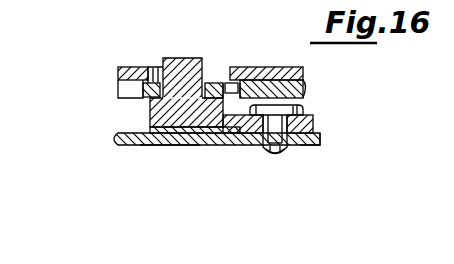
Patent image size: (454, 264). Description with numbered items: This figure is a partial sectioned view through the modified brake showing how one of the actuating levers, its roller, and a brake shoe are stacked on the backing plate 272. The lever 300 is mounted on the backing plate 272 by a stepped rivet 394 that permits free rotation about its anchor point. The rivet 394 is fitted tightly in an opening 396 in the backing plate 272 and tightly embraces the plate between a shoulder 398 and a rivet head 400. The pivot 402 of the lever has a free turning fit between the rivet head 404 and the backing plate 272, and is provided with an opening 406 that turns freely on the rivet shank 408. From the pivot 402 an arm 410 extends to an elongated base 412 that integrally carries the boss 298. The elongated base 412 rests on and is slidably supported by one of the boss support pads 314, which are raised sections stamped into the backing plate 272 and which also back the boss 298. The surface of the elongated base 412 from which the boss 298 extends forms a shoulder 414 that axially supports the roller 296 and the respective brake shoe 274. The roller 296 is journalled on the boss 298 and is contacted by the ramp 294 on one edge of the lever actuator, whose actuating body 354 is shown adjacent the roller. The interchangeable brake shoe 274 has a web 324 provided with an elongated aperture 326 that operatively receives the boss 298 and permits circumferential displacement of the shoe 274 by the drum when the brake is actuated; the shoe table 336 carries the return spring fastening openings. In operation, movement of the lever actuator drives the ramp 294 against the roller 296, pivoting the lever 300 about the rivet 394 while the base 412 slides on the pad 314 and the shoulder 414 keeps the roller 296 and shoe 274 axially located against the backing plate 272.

The backing plate 272 is at (121, 145).
The brake shoe 274 is at (116, 66).
The ramp 294 is at (231, 83).
The roller 296 is at (154, 79).
The boss 298 is at (183, 69).
The lever 300 is at (252, 93).
The boss support pad 314 is at (158, 148).
The web 324 is at (280, 68).
The elongated aperture 326 is at (158, 79).
The brake shoe table 336 is at (117, 88).
The actuating body 354 is at (305, 81).
The stepped rivet 394 is at (279, 156).
The opening 396 is at (273, 154).
The shoulder 398 is at (296, 146).
The rivet head 400 is at (271, 160).
The pivot 402 is at (246, 140).
The rivet head 404 is at (300, 107).
The opening 406 is at (313, 125).
The rivet shank 408 is at (300, 113).
The arm 410 is at (207, 145).
The elongated base 412 is at (165, 113).
The shoulder 414 is at (148, 98).